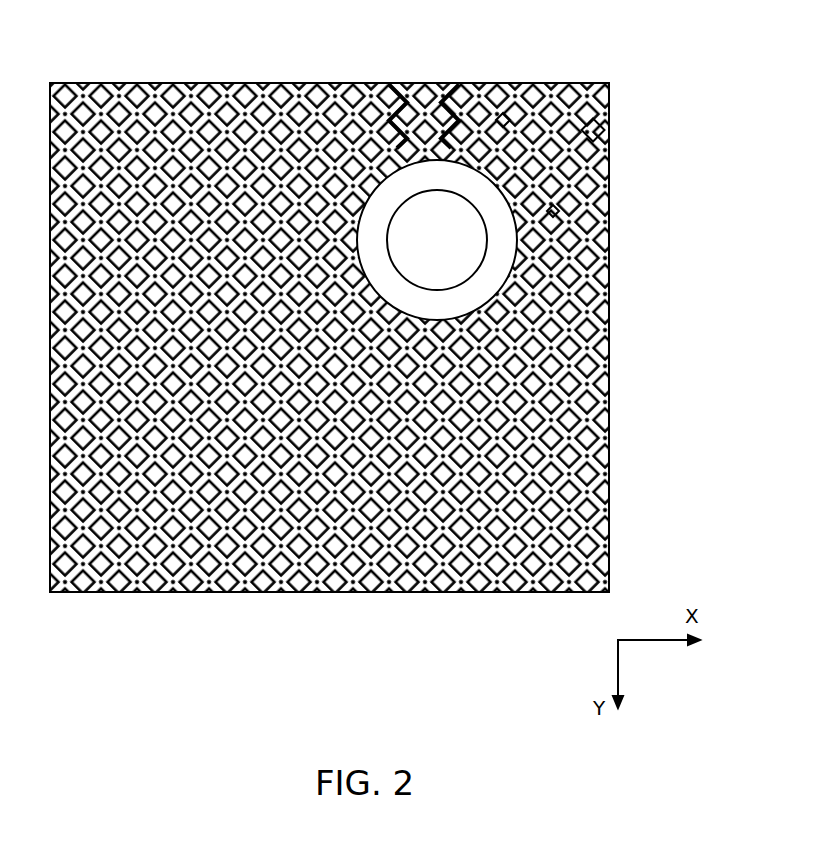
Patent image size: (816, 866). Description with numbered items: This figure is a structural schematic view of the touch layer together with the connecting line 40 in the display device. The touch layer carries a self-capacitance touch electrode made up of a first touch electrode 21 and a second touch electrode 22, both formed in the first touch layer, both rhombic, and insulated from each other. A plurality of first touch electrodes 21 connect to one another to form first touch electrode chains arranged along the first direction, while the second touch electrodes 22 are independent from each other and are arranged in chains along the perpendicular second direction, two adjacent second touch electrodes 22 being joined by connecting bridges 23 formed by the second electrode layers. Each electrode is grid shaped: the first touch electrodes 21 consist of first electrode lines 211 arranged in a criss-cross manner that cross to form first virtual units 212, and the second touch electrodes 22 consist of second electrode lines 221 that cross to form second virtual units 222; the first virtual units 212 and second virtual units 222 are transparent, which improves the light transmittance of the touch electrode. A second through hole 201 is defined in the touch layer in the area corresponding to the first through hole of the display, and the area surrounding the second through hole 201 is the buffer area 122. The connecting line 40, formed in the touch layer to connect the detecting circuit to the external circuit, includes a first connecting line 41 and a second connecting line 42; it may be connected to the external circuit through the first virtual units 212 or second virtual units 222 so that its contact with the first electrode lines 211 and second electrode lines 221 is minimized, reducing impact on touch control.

The first touch electrode 21 is at (385, 403).
The first electrode lines 211 is at (553, 216).
The first virtual units 212 is at (553, 205).
The second touch electrode 22 is at (385, 400).
The second electrode lines 221 is at (609, 93).
The second virtual units 222 is at (595, 130).
The connecting bridges 23 is at (503, 120).
The connecting line 40 is at (453, 370).
The first connecting line 41 is at (390, 97).
The second connecting line 42 is at (456, 93).
The buffer area 122 is at (498, 250).
The second through hole 201 is at (473, 278).